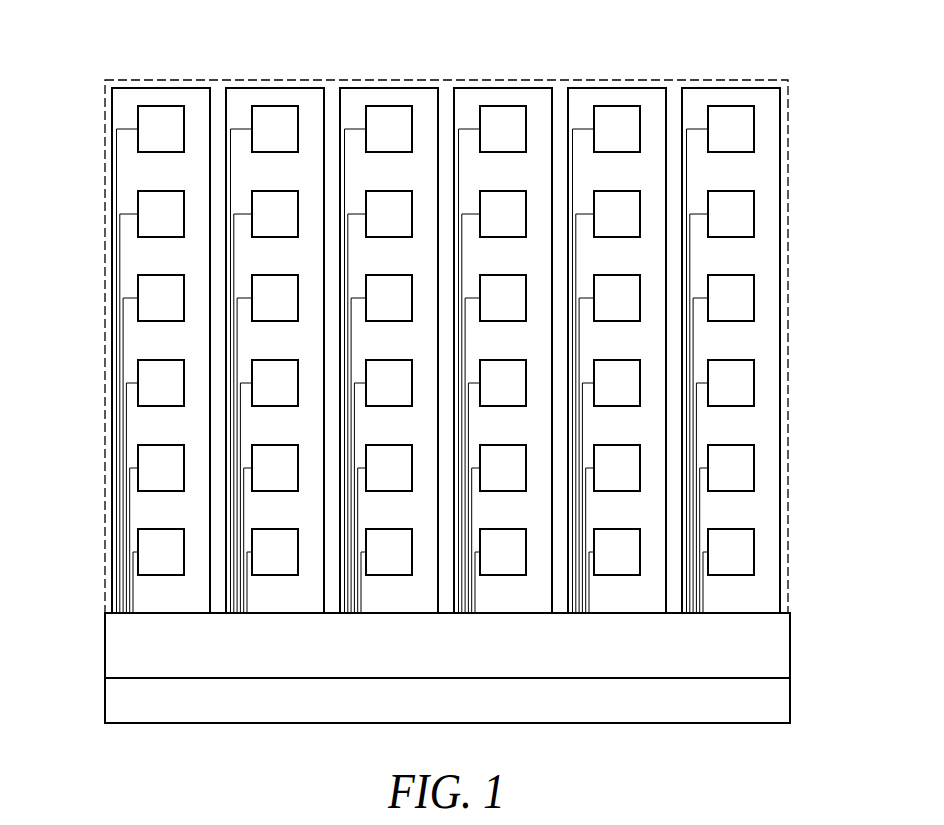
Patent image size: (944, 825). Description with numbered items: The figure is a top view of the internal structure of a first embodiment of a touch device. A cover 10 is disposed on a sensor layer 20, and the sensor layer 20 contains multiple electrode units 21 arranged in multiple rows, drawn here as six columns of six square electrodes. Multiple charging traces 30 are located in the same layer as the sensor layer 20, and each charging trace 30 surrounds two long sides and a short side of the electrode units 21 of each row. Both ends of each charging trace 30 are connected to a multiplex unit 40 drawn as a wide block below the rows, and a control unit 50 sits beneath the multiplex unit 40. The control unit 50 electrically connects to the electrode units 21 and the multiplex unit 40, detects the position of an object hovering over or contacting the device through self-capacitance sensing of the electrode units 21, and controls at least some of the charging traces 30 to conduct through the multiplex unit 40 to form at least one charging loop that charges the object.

The cover 10 is at (497, 80).
The sensor layer 20 is at (772, 215).
The electrode unit 21 is at (172, 116).
The charging trace 30 is at (130, 88).
The multiplex unit 40 is at (120, 648).
The control unit 50 is at (120, 703).